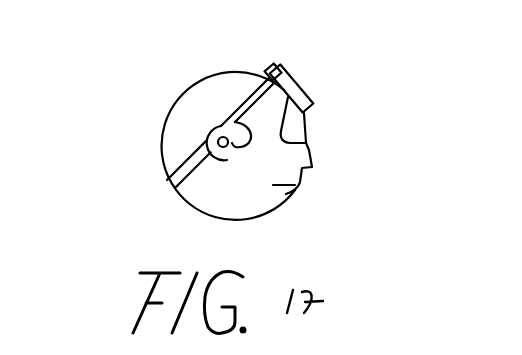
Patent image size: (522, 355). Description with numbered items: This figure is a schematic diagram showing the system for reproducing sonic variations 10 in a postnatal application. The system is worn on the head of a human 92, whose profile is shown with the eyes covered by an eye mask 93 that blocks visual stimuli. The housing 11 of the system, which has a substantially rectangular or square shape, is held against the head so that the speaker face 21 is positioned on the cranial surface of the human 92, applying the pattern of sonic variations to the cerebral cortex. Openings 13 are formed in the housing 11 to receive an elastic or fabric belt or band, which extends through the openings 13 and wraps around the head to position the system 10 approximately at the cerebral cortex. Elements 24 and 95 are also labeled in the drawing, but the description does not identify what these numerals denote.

The system for reproducing sonic variations 10 is at (313, 91).
The housing 11 is at (288, 78).
The openings 13 is at (281, 66).
The speaker face 21 is at (249, 72).
The ear hub 24 is at (186, 147).
The human 92 is at (199, 90).
The eye mask 93 is at (317, 133).
The lower strap 95 is at (156, 189).